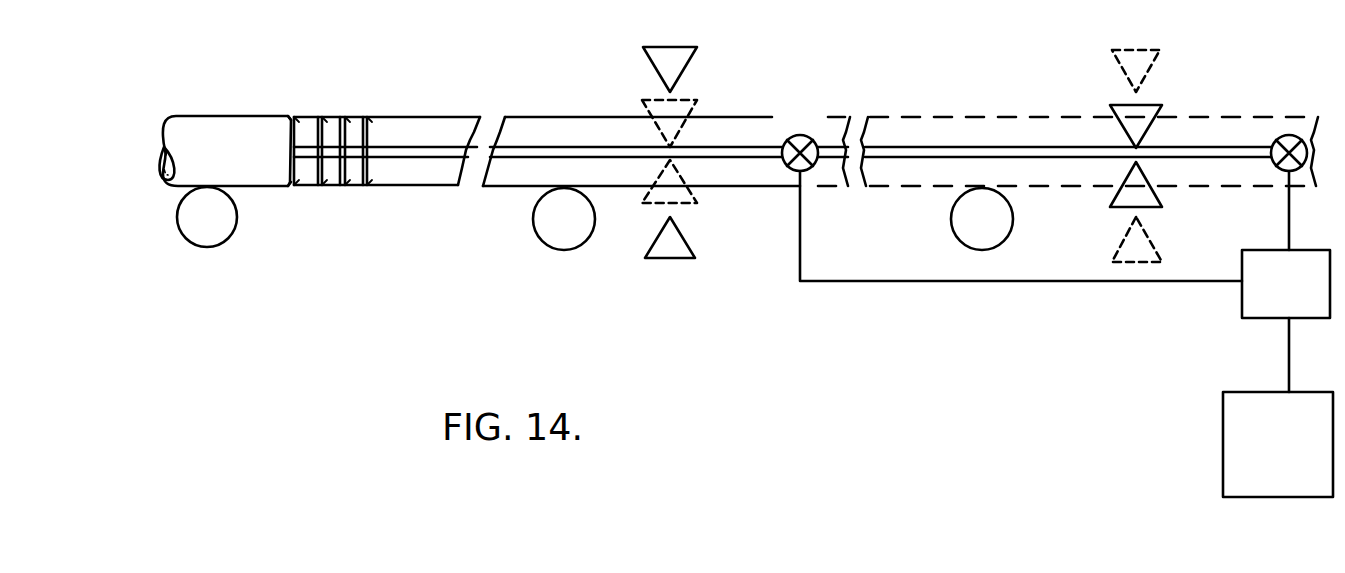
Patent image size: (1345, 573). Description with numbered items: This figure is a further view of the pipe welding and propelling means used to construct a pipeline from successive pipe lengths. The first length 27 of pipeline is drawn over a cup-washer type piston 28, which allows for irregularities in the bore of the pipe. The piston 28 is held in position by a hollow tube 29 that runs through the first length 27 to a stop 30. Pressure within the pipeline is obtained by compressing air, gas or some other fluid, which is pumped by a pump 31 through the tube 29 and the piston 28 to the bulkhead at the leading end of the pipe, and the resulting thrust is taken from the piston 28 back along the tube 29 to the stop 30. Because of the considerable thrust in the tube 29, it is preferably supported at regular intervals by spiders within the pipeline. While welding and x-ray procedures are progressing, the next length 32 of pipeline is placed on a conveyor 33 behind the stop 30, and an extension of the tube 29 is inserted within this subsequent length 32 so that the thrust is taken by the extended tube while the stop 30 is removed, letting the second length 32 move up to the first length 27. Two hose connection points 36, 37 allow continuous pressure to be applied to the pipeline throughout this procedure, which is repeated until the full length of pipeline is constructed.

The first length of pipeline 27 is at (217, 118).
The cup-washer type piston 28 is at (351, 116).
The hollow tube 29 is at (510, 148).
The stop 30 is at (692, 88).
The pump 31 is at (284, 118).
The next length of pipeline 32 is at (920, 119).
The conveyor 33 is at (550, 232).
The hose connection point 36 is at (808, 116).
The hose connection point 37 is at (1289, 135).